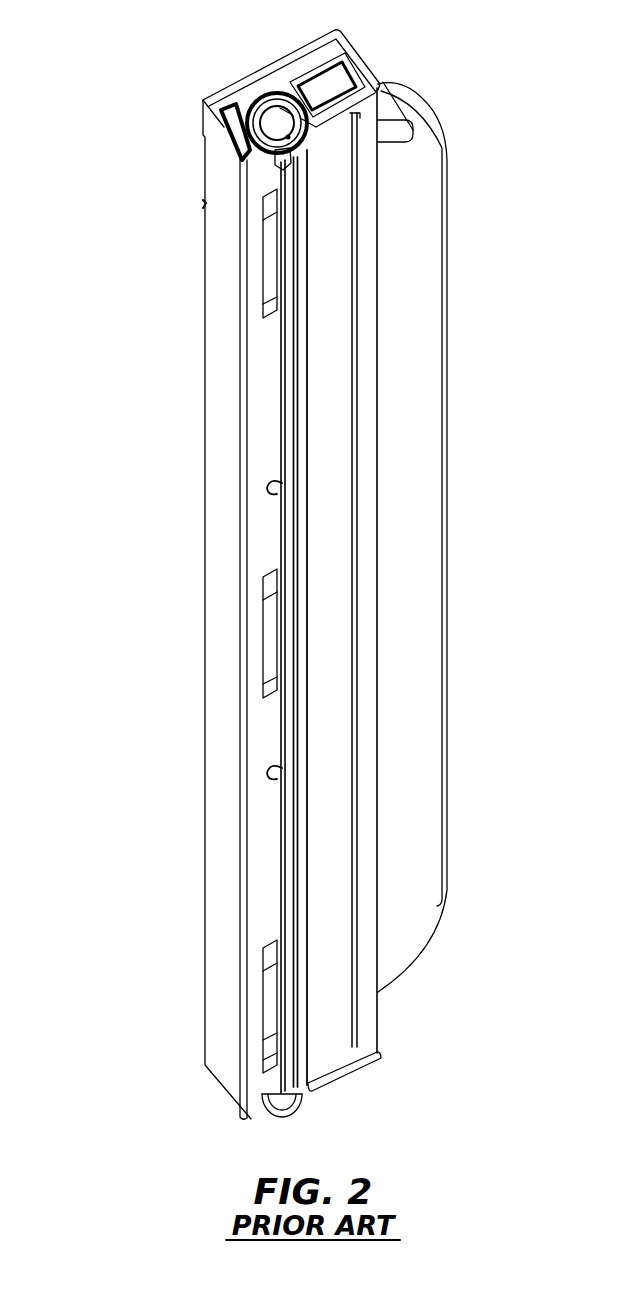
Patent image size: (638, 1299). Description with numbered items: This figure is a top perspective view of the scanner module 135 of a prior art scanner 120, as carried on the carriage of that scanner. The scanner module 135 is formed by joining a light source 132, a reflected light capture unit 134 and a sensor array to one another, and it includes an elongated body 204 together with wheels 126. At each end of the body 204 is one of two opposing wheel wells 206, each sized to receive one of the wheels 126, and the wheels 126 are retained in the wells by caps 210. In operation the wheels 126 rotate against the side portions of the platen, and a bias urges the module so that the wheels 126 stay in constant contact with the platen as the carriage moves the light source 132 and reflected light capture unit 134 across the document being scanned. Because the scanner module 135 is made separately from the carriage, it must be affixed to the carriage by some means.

The scanner 120 is at (271, 573).
The wheels 126 is at (271, 93).
The light source 132 is at (302, 218).
The reflected light capture unit 134 is at (282, 501).
The scanner module 135 is at (214, 228).
The body 204 is at (205, 318).
The wheel wells 206 is at (247, 106).
The caps 210 is at (338, 49).